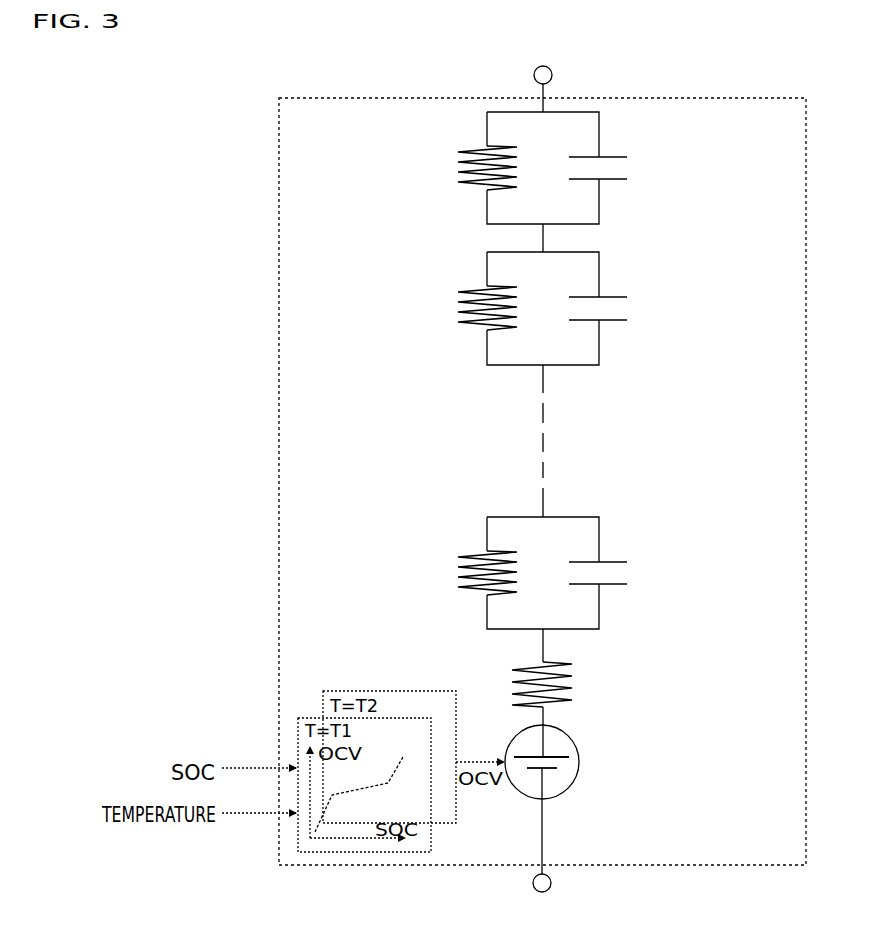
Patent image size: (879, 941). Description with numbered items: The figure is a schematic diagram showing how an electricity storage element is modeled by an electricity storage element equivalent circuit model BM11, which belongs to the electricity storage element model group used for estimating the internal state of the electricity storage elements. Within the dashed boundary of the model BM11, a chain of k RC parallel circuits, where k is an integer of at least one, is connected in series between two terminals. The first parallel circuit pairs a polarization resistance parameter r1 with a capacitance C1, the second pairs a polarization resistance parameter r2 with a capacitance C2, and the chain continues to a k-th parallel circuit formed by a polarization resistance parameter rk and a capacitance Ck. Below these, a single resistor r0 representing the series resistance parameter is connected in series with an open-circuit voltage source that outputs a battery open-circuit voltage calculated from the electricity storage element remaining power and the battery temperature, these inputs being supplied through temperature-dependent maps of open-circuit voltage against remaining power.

The electricity storage element equivalent circuit model BM11 is at (279, 98).
The polarization resistance parameter r1 is at (459, 149).
The capacitance of first RC parallel circuit C1 is at (628, 151).
The polarization resistance parameter r2 is at (459, 289).
The capacitance of second RC parallel circuit C2 is at (628, 291).
The polarization resistance parameter rk is at (459, 553).
The capacitance of k-th RC parallel circuit Ck is at (628, 556).
The resistor r0 is at (513, 681).